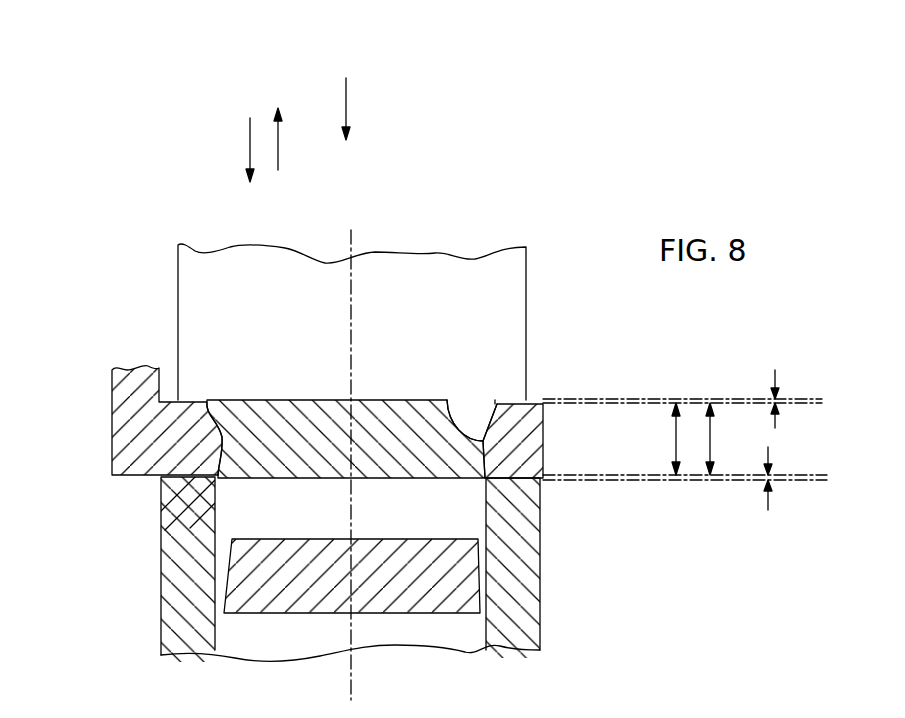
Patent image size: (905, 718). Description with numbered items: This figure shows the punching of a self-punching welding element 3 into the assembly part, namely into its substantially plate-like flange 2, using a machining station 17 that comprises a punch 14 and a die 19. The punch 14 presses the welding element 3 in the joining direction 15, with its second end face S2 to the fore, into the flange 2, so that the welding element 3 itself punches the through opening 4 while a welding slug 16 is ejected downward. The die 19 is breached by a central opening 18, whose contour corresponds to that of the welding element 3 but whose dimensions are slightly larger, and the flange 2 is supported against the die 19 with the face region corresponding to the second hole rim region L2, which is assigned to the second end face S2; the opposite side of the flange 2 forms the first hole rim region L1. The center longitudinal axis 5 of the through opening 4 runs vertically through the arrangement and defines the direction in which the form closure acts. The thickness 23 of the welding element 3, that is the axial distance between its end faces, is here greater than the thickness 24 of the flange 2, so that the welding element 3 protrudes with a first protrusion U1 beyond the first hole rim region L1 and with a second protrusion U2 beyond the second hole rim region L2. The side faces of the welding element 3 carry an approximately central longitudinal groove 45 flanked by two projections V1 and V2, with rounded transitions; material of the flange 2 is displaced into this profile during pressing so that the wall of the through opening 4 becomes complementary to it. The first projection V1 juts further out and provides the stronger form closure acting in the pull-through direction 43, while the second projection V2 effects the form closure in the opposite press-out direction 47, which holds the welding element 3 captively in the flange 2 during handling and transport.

The flange 2 is at (543, 421).
The welding element 3 is at (263, 417).
The through opening 4 is at (449, 402).
The center longitudinal axis 5 is at (351, 240).
The punch 14 is at (466, 293).
The joining direction 15 is at (347, 90).
The welding slug 16 is at (468, 553).
The machining station 17 is at (595, 218).
The central opening 18 is at (226, 477).
The die 19 is at (525, 612).
The thickness of the welding element 23 is at (676, 437).
The thickness of the flange 24 is at (712, 432).
The pull-through direction 43 is at (248, 143).
The groove 45 is at (222, 438).
The press-out direction 47 is at (278, 133).
The first projection V1 is at (215, 400).
The second projection V2 is at (240, 511).
The second end face S2 is at (297, 482).
The first hole rim region L1 is at (508, 402).
The second hole rim region L2 is at (538, 485).
The first protrusion U1 is at (778, 378).
The second protrusion U2 is at (772, 498).